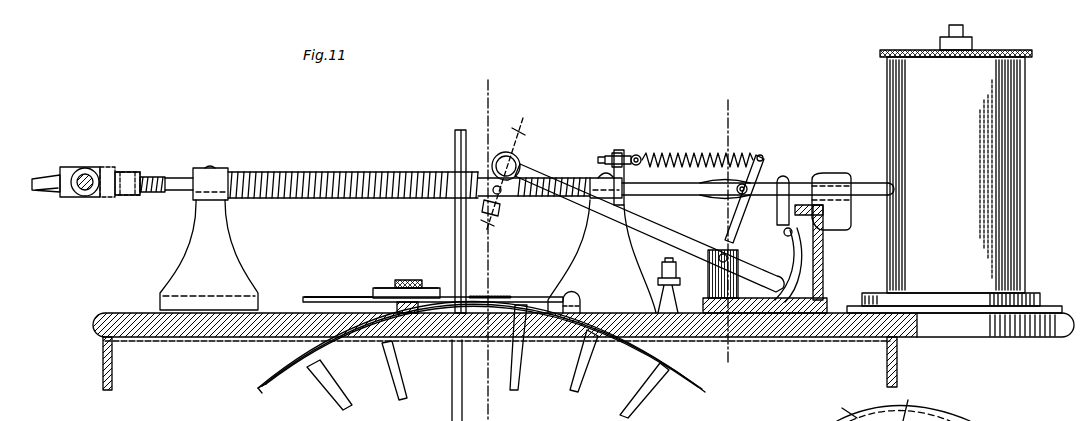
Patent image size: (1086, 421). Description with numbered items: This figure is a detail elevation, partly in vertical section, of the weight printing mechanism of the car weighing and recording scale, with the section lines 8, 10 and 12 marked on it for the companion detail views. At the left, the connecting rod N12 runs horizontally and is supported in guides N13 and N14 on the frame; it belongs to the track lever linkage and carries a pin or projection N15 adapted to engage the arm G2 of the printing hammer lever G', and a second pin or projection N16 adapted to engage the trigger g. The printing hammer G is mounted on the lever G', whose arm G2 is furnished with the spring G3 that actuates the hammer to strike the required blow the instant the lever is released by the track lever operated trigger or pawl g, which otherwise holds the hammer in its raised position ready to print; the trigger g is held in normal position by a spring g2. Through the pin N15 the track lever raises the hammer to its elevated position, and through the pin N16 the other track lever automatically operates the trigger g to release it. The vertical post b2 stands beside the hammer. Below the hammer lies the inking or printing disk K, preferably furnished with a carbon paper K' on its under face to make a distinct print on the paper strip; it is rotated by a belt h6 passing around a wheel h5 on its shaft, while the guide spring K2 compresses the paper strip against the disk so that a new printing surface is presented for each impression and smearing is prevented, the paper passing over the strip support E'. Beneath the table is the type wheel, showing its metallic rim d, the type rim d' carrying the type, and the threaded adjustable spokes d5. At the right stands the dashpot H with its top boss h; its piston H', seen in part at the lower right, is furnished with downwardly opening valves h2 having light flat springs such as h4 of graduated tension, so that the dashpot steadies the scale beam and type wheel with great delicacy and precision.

The connecting rod N12 is at (45, 177).
The guide N13 is at (198, 206).
The pin or projection N15 is at (728, 192).
The post b2 is at (461, 130).
The section line 12- 12 is at (494, 93).
The section line 8- 8 is at (499, 179).
The printing hammer G is at (501, 186).
The printing hammer lever G' is at (649, 228).
The spring G3 is at (663, 150).
The guide N14 is at (602, 231).
The section line 10- 10 is at (736, 343).
The arm G2 is at (765, 166).
The trigger or pawl g is at (784, 182).
The spring g2 is at (824, 264).
The pin or projection N16 is at (814, 186).
The dashpot H is at (954, 193).
The boss h is at (965, 31).
The carbon paper K' is at (423, 300).
The inking or printing disk K is at (380, 284).
The wheel h5 is at (386, 286).
The belt h6 is at (374, 298).
The table E' is at (583, 323).
The guide spring K2 is at (566, 302).
The metallic rim d is at (481, 354).
The type rim d' is at (245, 384).
The spokes d5 is at (350, 398).
The piston H' is at (918, 410).
The downwardly opening valves h2 is at (853, 397).
The flat spring h4 is at (923, 396).